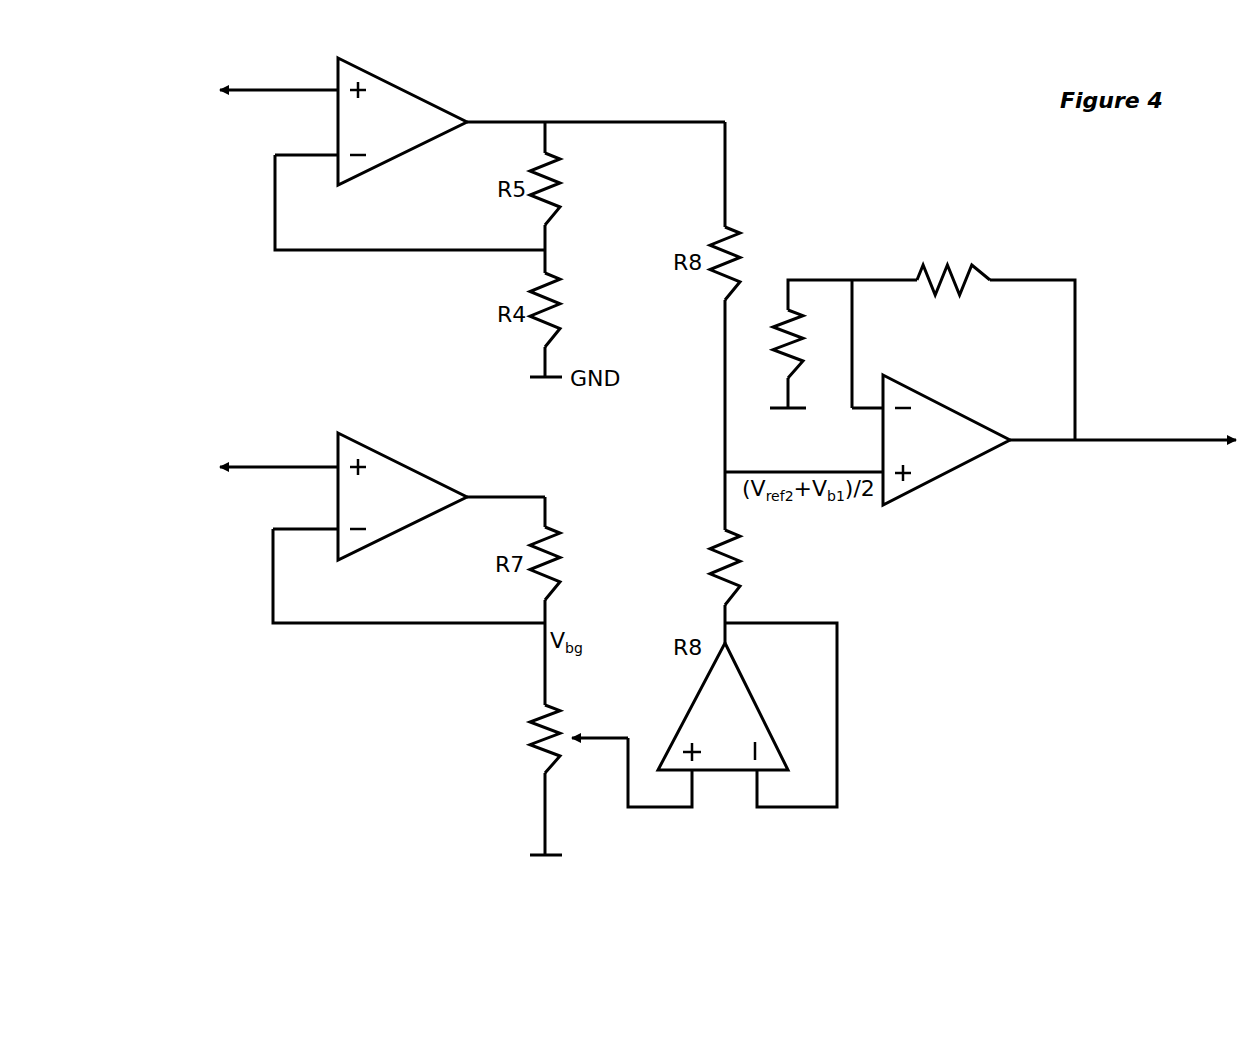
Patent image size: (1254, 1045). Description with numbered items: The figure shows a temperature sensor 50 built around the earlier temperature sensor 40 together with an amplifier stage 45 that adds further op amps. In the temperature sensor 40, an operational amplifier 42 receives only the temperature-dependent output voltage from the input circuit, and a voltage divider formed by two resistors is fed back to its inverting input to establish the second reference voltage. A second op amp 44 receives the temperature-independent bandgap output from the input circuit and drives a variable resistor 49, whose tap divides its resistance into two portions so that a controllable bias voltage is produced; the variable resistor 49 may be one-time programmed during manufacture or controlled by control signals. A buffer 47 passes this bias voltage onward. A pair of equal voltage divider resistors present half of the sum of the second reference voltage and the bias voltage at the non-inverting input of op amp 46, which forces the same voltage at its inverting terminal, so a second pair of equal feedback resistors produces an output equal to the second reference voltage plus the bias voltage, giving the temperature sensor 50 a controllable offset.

The temperature sensor circuit 40 is at (208, 322).
The operational amplifier 42 is at (400, 140).
The op amp 44 is at (398, 510).
The amplifier stage 45 is at (1127, 862).
The op amp 46 is at (940, 462).
The unity-gain buffer amplifier 47 is at (735, 708).
The variable resistor 49 is at (522, 740).
The temperature sensor 50 is at (1008, 756).